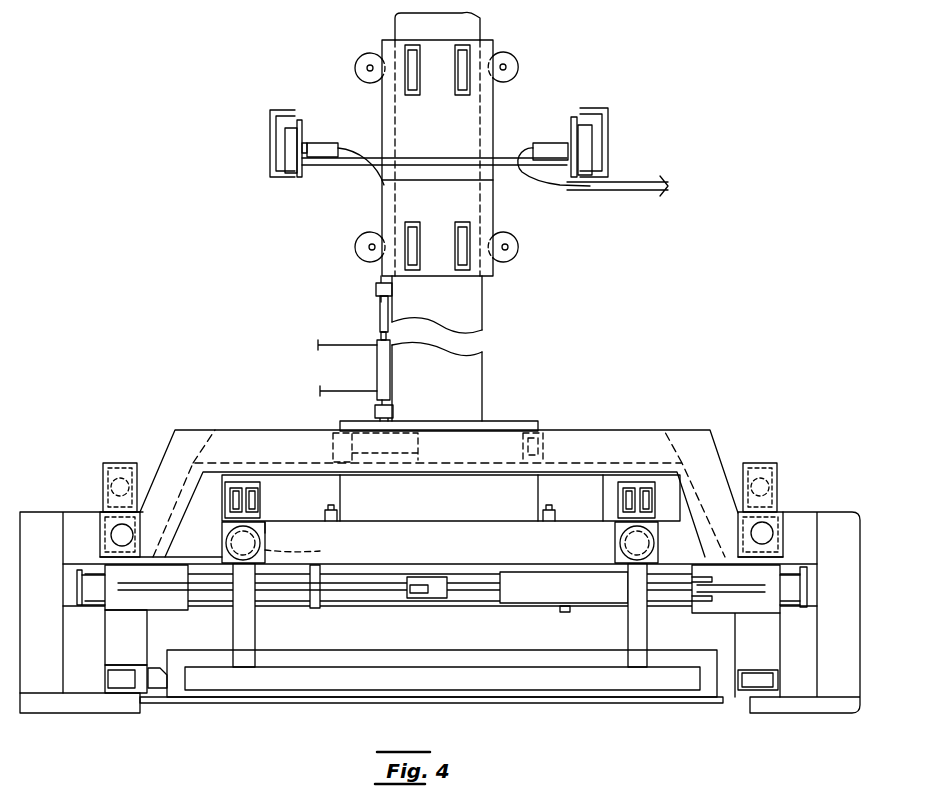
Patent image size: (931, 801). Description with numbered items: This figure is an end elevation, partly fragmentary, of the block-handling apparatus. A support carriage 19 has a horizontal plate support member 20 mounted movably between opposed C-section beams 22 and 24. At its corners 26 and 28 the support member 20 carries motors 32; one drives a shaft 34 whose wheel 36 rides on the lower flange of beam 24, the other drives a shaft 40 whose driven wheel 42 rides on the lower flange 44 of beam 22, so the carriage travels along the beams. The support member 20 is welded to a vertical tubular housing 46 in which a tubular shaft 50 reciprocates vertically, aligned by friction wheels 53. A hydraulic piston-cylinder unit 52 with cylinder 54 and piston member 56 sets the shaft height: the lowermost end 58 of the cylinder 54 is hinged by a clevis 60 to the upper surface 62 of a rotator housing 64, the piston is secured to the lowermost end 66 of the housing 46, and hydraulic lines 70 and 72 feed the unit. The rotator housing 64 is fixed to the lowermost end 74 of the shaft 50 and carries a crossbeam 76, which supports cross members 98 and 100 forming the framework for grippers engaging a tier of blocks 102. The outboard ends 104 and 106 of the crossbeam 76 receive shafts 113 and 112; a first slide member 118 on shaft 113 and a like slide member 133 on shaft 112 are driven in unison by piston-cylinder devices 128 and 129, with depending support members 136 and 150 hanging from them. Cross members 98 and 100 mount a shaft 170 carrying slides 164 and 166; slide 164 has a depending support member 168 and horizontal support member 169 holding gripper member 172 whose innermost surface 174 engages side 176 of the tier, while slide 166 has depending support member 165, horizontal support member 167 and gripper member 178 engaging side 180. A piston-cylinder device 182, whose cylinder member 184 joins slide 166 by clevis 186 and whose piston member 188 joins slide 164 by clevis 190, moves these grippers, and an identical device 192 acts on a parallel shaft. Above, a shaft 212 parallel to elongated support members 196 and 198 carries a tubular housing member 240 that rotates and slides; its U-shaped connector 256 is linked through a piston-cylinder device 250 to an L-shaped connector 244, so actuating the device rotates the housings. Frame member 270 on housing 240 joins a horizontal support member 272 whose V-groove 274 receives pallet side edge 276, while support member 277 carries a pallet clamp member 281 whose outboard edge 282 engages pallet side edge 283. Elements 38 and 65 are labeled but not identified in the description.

The support carriage 19 is at (367, 178).
The horizontal plate support member 20 is at (505, 157).
The elongated beam 22 is at (596, 109).
The elongated beam 24 is at (291, 110).
The corner of support member 26 is at (320, 166).
The corner of support member 28 is at (556, 182).
The motor 32 is at (330, 143).
The driven shaft 34 is at (306, 143).
The wheel 36 is at (286, 140).
The plate 38 is at (279, 178).
The driven shaft 40 is at (573, 118).
The driven wheel 42 is at (590, 144).
The lower horizontal flange 44 is at (597, 190).
The vertical tubular housing 46 is at (486, 105).
The tubular shaft 50 is at (470, 298).
The hydraulic piston-cylinder unit 52 is at (378, 336).
The friction wheels 53 is at (514, 61).
The cylinder 54 is at (377, 367).
The piston member 56 is at (391, 322).
The lowermost end of cylinder 58 is at (376, 411).
The clevis 60 is at (393, 412).
The upper surface of rotator housing 62 is at (420, 420).
The rotator housing 64 is at (510, 421).
The upper bracket 65 is at (376, 288).
The lowermost end of housing 66 is at (384, 278).
The hydraulic line 70 is at (340, 344).
The hydraulic line 72 is at (338, 390).
The lowermost end of shaft 74 is at (485, 420).
The crossbeam 76 is at (495, 534).
The cross member 98 is at (320, 607).
The cross member 100 is at (564, 613).
The tier of blocks 102 is at (689, 647).
The outboard end of support beam 104 is at (614, 541).
The outboard end of support beam 106 is at (267, 529).
The shaft 112 is at (311, 552).
The elongated shaft 113 is at (659, 544).
The first slidemember 118 is at (660, 527).
The piston-cylinder device 128 is at (650, 482).
The piston-cylinder device 129 is at (260, 491).
The slidemember 133 is at (226, 554).
The support member 136 is at (645, 623).
The depending support member 150 is at (256, 633).
The slide 164 is at (115, 568).
The depending support member 165 is at (781, 634).
The slide 166 is at (772, 594).
The horizontal support member 167 is at (780, 679).
The depending support member 168 is at (120, 632).
The horizontal support member 169 is at (103, 676).
The shaft 170 is at (388, 597).
The gripper member 172 is at (146, 684).
The innermost surface 174 is at (170, 682).
The side of tier of blocks 176 is at (161, 667).
The gripper member 178 is at (726, 676).
The side of tier of blocks 180 is at (722, 702).
The piston-cylinder device 182 is at (513, 609).
The cylinder member 184 is at (609, 598).
The clevis 186 is at (707, 580).
The piston member 188 is at (462, 590).
The clevis 190 is at (437, 578).
The piston-cylinder device 192 is at (571, 516).
The elongated support member 196 is at (333, 508).
The elongated support member 198 is at (606, 473).
The shaft 212 is at (764, 526).
The tubular housing member 240 is at (784, 539).
The L-shaped connector 244 is at (215, 440).
The piston-cylinder device 250 is at (433, 463).
The U-shaped connector 256 is at (638, 440).
The first frame member 270 is at (823, 627).
The horizontal support member 272 is at (803, 708).
The V-groove 274 is at (744, 706).
The side edge of pallet 276 is at (745, 703).
The support member 277 is at (32, 624).
The pallet clamp member 281 is at (54, 706).
The outboard edge 282 is at (137, 702).
The side edge of pallet 283 is at (143, 703).